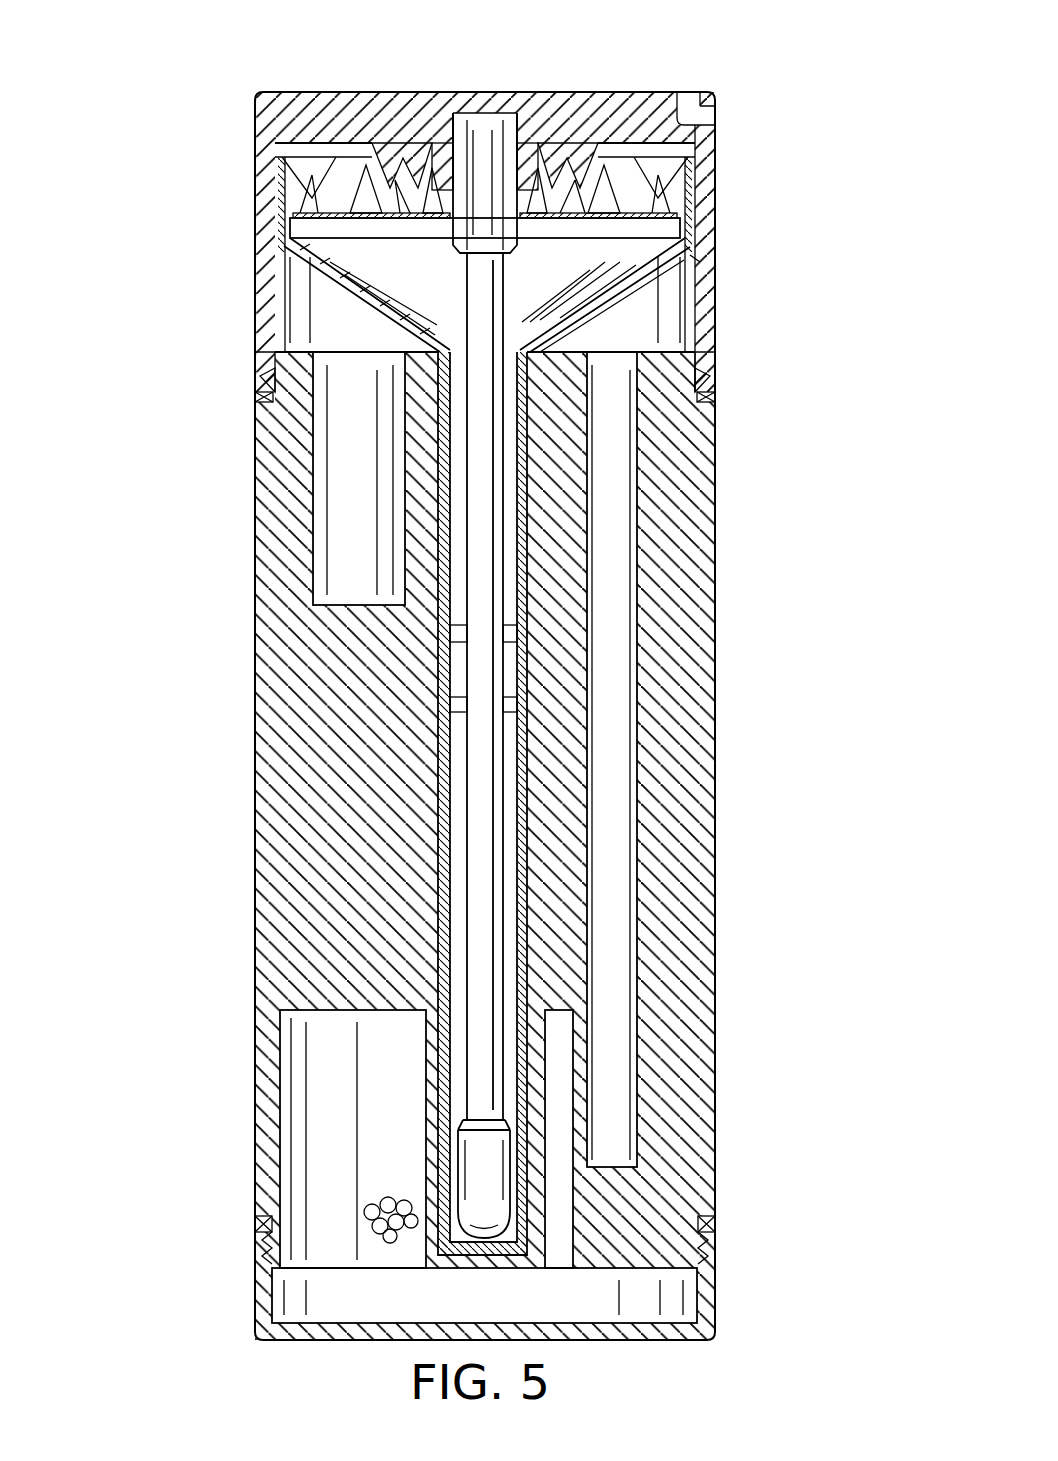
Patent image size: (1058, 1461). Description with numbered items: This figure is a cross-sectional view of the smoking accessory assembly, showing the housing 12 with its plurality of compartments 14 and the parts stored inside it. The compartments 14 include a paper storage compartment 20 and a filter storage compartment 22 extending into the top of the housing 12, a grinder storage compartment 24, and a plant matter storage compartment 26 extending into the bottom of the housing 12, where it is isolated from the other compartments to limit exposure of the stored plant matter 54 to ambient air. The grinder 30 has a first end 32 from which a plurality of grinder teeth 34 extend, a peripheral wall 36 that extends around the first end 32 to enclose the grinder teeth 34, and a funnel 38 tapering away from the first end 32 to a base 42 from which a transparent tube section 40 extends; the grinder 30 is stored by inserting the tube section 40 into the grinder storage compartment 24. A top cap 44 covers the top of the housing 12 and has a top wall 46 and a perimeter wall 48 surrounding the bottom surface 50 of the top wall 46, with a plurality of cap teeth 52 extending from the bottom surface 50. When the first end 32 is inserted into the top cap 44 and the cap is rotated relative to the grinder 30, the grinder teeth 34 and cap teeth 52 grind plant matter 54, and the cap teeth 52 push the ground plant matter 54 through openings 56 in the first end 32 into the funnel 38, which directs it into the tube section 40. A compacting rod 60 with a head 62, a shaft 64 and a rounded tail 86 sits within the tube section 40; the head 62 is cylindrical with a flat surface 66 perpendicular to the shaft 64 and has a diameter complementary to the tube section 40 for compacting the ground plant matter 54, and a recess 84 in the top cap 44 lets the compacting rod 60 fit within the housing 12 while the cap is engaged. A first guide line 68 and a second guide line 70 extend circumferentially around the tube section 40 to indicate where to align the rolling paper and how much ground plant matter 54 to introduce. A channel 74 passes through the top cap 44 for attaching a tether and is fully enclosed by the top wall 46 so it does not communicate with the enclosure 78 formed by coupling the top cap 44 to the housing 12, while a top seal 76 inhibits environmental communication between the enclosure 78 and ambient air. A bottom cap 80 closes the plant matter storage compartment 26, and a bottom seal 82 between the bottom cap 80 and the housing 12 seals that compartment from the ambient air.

The housing 12 is at (255, 843).
The compartments 14 is at (467, 810).
The paper storage compartment 20 is at (608, 633).
The filter storage compartment 22 is at (323, 558).
The grinder storage compartment 24 is at (545, 1078).
The plant matter storage compartment 26 is at (312, 1168).
The grinder 30 is at (302, 305).
The first end 32 is at (668, 238).
The grinder teeth 34 is at (360, 185).
The peripheral wall 36 is at (305, 198).
The funnel 38 is at (600, 272).
The tube section 40 is at (634, 686).
The base 42 is at (540, 345).
The top cap 44 is at (557, 206).
The top wall 46 is at (376, 110).
The perimeter wall 48 is at (716, 258).
The bottom surface 50 is at (280, 165).
The cap teeth 52 is at (325, 168).
The plant matter 54 is at (365, 1245).
The openings 56 is at (440, 322).
The compacting rod 60 is at (265, 368).
The head 62 is at (456, 137).
The shaft 64 is at (483, 890).
The flat surface 66 is at (492, 132).
The first guide line 68 is at (445, 632).
The second guide line 70 is at (445, 708).
The channel 74 is at (703, 117).
The top seal 76 is at (713, 395).
The enclosure 78 is at (305, 320).
The bottom cap 80 is at (668, 1342).
The bottom seal 82 is at (710, 1220).
The recess 84 is at (520, 128).
The tail 86 is at (495, 1190).